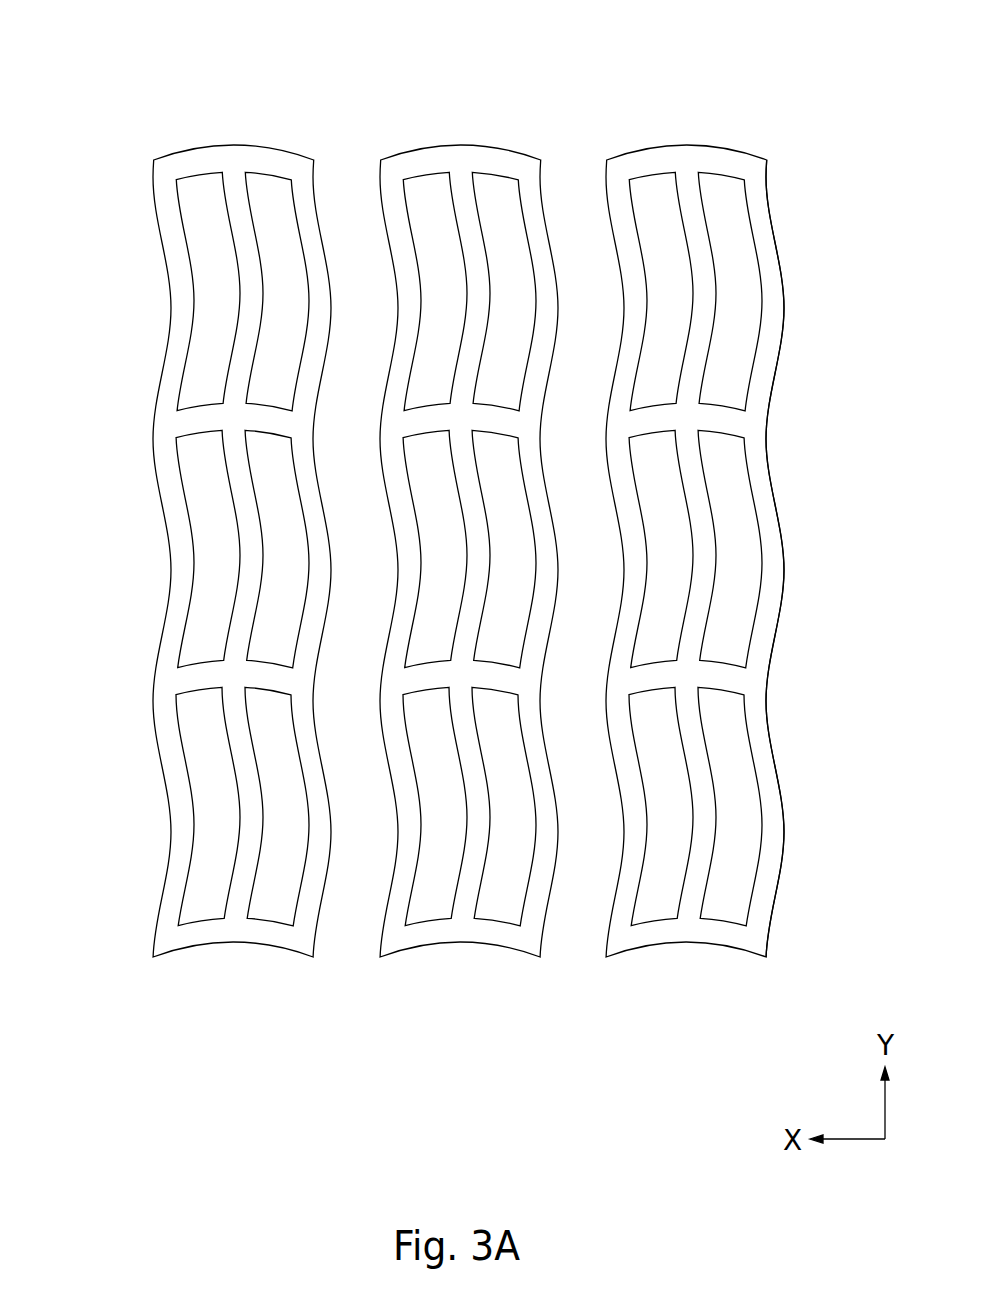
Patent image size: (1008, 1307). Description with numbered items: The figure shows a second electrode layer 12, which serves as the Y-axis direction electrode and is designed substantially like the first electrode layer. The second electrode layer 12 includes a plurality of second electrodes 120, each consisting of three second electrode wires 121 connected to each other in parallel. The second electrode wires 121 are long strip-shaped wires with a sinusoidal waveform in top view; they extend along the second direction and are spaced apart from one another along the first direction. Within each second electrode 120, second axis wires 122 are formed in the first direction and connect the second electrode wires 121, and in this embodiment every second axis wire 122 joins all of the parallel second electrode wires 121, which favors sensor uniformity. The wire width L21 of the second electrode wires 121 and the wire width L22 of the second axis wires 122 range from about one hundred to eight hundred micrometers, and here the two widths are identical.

The second electrode layer 12 is at (58, 40).
The second electrode 120 is at (771, 188).
The second electrode wire 121 is at (784, 282).
The second axis wire 122 is at (723, 405).
The wire width of the second electrode wires L21 is at (472, 172).
The wire width of the second axis wires L22 is at (186, 408).